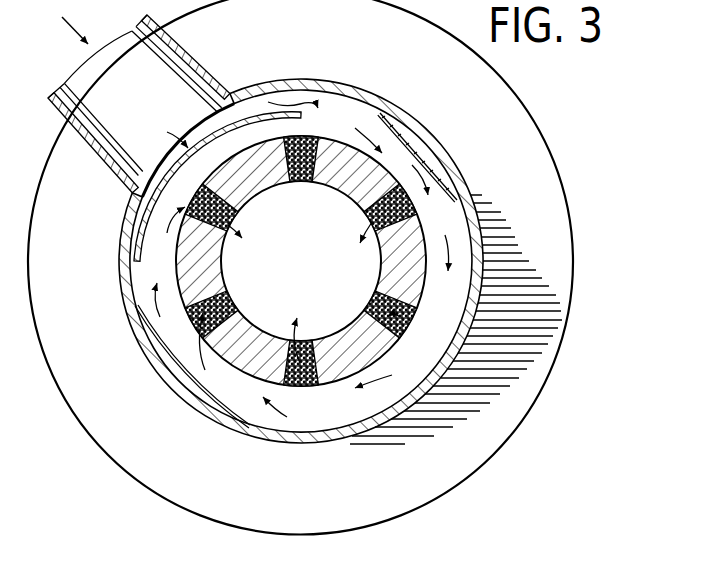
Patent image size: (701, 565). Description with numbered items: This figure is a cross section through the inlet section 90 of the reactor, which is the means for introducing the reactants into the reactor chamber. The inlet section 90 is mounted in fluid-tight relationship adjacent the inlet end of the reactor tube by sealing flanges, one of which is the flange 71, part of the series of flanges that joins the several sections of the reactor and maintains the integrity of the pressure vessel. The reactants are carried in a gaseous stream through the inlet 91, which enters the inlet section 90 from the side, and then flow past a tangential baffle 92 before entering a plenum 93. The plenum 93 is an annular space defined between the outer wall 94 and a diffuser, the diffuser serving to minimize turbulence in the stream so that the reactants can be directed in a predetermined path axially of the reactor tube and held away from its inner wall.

The sealing flange 71 is at (562, 271).
The inlet section 90 is at (164, 389).
The inlet 91 is at (62, 109).
The tangential baffle 92 is at (248, 117).
The plenum 93 is at (426, 171).
The outer wall 94 is at (252, 430).